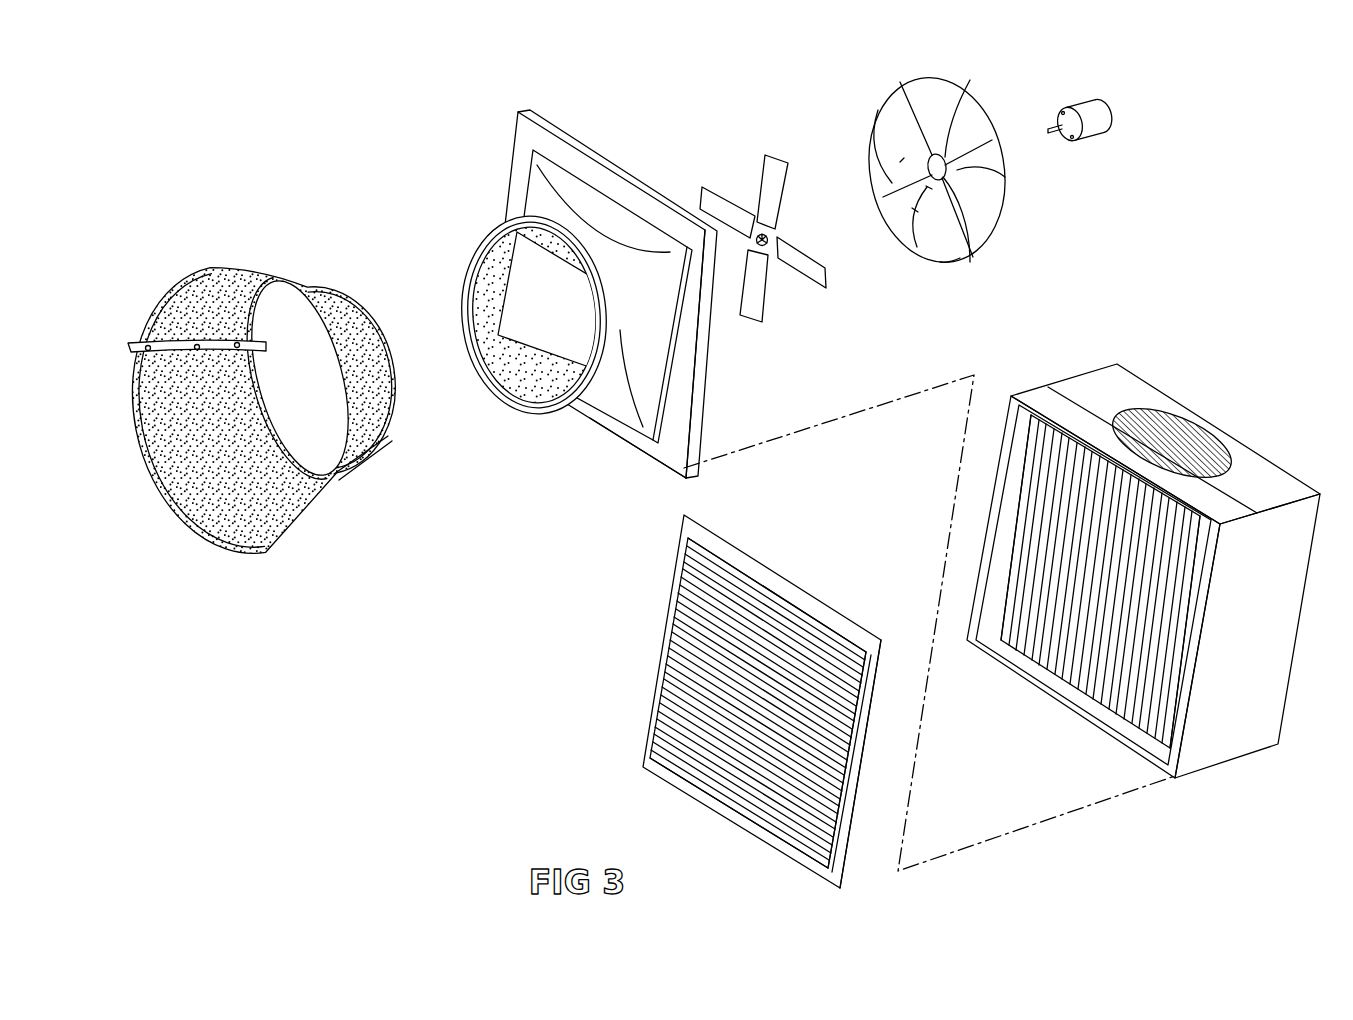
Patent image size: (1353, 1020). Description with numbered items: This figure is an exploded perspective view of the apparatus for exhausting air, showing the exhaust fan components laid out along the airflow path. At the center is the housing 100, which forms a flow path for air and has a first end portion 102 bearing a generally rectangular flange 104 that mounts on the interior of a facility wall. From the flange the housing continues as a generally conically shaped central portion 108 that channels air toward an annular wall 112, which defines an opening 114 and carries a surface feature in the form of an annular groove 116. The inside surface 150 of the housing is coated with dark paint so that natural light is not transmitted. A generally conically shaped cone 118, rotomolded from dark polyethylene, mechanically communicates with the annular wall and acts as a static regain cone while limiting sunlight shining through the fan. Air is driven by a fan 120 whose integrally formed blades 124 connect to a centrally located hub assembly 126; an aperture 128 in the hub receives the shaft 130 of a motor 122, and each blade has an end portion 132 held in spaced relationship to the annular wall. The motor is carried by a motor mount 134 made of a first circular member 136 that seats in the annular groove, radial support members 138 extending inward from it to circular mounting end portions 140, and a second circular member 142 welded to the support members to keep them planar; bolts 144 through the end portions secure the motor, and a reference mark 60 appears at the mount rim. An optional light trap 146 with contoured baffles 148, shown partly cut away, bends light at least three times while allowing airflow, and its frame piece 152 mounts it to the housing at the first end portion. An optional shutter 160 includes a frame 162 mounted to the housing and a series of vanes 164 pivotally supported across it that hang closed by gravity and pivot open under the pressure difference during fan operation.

The fan guard rim 60 is at (953, 263).
The housing 100 is at (656, 329).
The first end portion 102 is at (697, 392).
The flange 104 is at (680, 452).
The central portion 108 is at (623, 329).
The annular wall 112 is at (506, 335).
The opening 114 is at (475, 262).
The annular groove 116 is at (534, 404).
The cone 118 is at (267, 278).
The fan 120 is at (802, 238).
The motor 122 is at (1113, 105).
The blades 124 is at (753, 310).
The hub assembly 126 is at (777, 233).
The aperture 128 is at (755, 227).
The shaft 130 is at (1048, 127).
The end portion 132 is at (777, 155).
The motor mount 134 is at (990, 158).
The first circular member 136 is at (1000, 203).
The radial support members 138 is at (918, 110).
The circular mounting end portions 140 is at (953, 130).
The second circular member 142 is at (1000, 177).
The bolts 144 is at (900, 160).
The light trap 146 is at (1112, 527).
The baffles 148 is at (1110, 711).
The inside surface 150 is at (497, 298).
The frame piece 152 is at (1009, 499).
The shutter 160 is at (746, 690).
The frame 162 is at (878, 657).
The vanes 164 is at (667, 640).